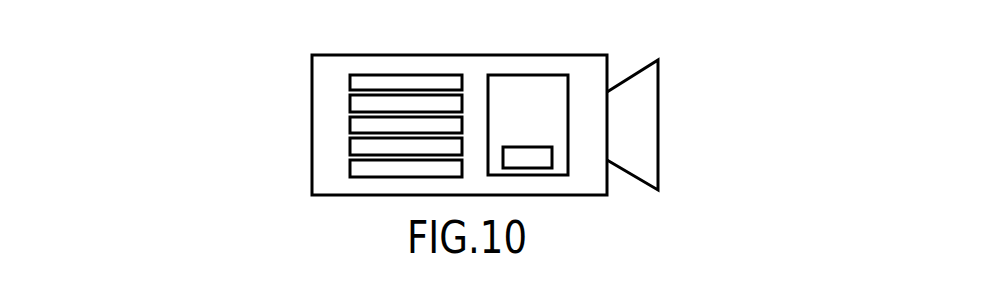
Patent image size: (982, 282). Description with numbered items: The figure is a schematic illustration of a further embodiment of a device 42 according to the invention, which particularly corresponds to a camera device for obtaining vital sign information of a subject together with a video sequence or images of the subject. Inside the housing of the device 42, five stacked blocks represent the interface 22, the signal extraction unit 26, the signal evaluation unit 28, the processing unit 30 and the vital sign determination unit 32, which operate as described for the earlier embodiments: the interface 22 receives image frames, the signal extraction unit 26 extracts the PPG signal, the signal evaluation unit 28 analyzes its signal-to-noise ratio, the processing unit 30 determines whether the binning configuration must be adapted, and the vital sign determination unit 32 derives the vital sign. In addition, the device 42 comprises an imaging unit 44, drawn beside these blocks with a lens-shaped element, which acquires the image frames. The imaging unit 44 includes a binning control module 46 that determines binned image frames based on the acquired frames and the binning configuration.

The interface 22 is at (351, 77).
The signal extraction unit 26 is at (350, 101).
The signal evaluation unit 28 is at (350, 123).
The processing unit 30 is at (350, 147).
The vital sign determination unit 32 is at (350, 169).
The device 42 is at (312, 188).
The imaging unit 44 is at (526, 75).
The binning control module 46 is at (540, 168).